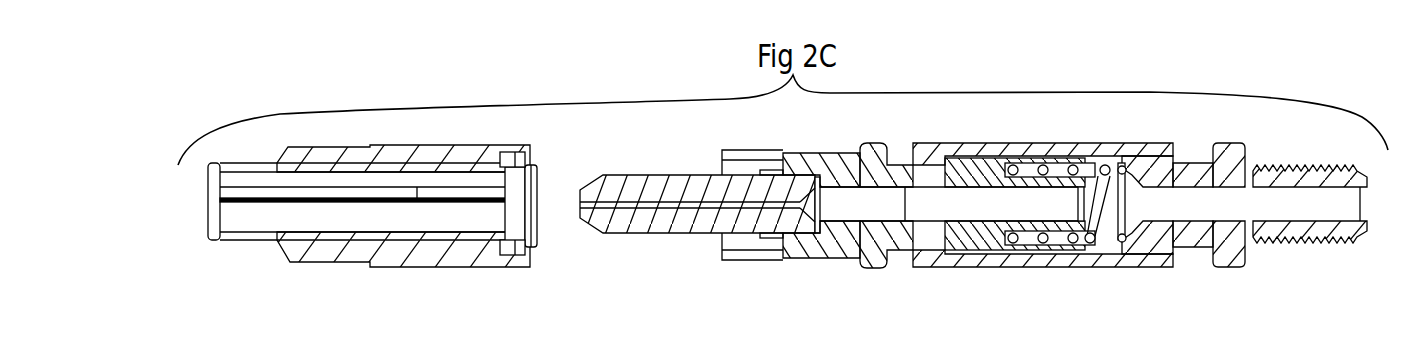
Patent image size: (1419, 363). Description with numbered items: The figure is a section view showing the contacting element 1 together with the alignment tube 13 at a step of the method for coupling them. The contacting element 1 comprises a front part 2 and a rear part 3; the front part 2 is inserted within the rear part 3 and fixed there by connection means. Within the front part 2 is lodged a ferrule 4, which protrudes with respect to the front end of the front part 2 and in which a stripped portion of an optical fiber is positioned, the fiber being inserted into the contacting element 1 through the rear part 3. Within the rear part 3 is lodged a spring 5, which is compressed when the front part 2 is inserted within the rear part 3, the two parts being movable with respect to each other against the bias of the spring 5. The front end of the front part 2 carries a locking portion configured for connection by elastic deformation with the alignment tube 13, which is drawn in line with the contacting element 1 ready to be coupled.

The contacting element 1 is at (981, 298).
The front part 2 is at (841, 242).
The rear part 3 is at (1160, 252).
The ferrule 4 is at (657, 217).
The spring 5 is at (1062, 243).
The alignment tube 13 is at (398, 280).